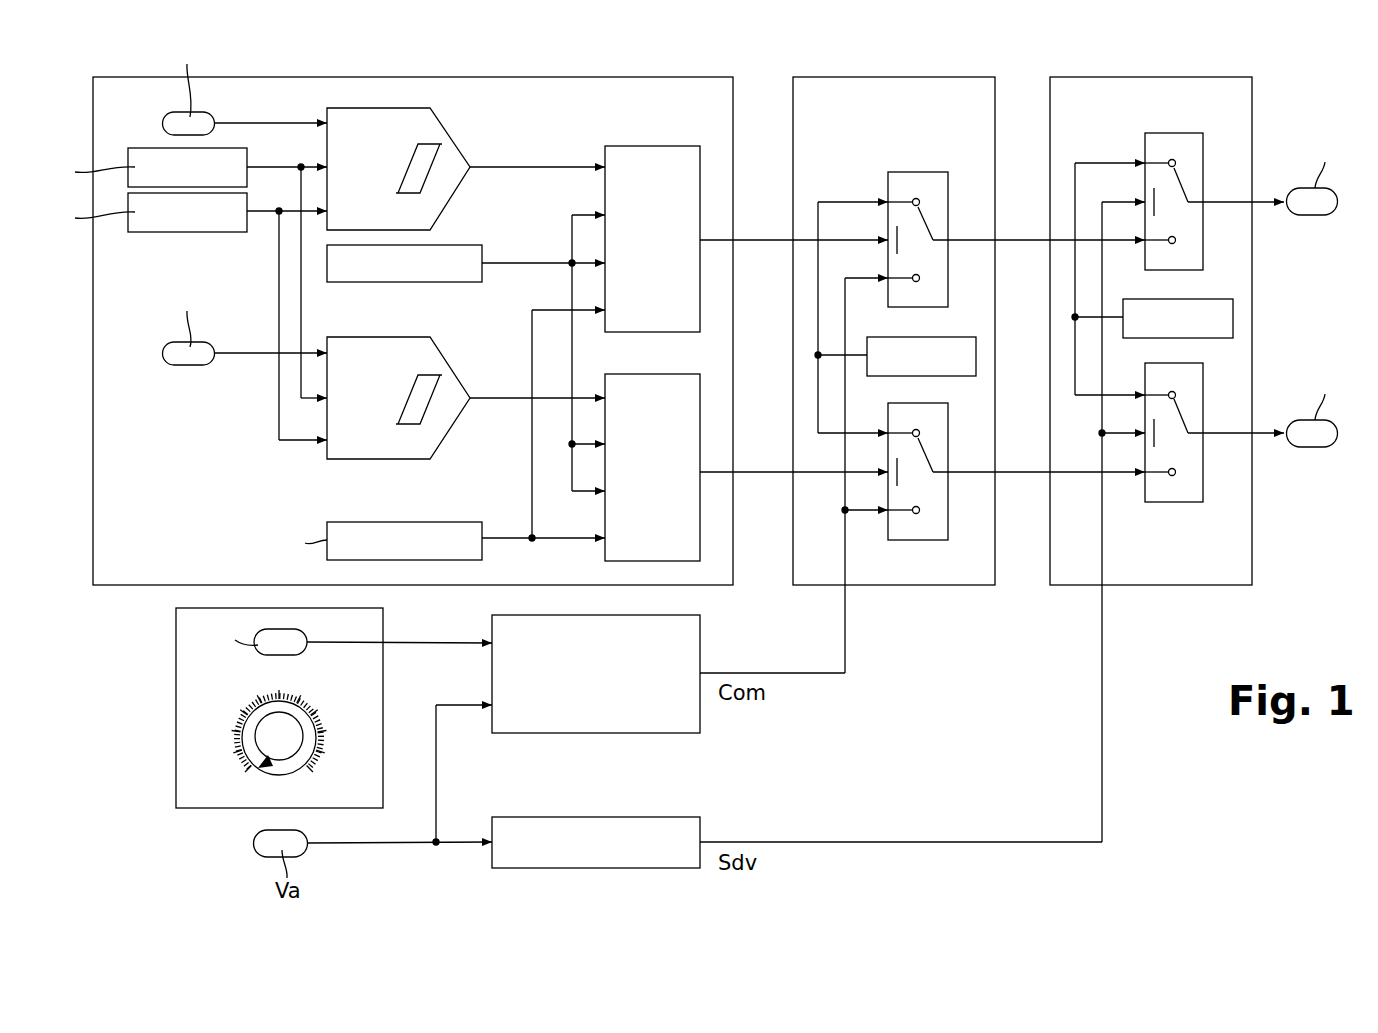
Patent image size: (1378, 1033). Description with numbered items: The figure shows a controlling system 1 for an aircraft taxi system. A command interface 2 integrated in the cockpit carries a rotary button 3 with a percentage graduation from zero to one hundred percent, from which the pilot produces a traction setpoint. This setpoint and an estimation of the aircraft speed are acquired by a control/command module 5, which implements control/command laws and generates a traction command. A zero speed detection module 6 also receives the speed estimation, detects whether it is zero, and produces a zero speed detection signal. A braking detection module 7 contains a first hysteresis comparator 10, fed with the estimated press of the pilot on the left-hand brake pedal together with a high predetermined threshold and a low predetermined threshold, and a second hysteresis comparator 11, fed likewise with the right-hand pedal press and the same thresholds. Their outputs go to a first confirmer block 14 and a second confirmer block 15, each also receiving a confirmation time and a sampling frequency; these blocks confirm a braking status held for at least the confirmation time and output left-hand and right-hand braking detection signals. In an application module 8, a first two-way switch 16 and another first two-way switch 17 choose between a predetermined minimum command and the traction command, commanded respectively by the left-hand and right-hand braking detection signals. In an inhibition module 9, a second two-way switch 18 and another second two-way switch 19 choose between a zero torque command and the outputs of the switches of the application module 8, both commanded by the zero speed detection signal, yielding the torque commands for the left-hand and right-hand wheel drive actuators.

The controlling system 1 is at (766, 60).
The command interface 2 is at (148, 726).
The rotary button 3 is at (262, 730).
The control/command module 5 is at (596, 674).
The zero speed detection module 6 is at (596, 842).
The braking detection module 7 is at (588, 77).
The application module 8 is at (924, 77).
The inhibition module 9 is at (1142, 77).
The first hysteresis comparator 10 is at (383, 118).
The second hysteresis comparator 11 is at (368, 455).
The first confirmer block 14 is at (652, 239).
The second confirmer block 15 is at (652, 467).
The first two-way switch 16 is at (935, 172).
The first two-way switch 17 is at (935, 541).
The second two-way switch 18 is at (1184, 133).
The second two-way switch 19 is at (1182, 503).